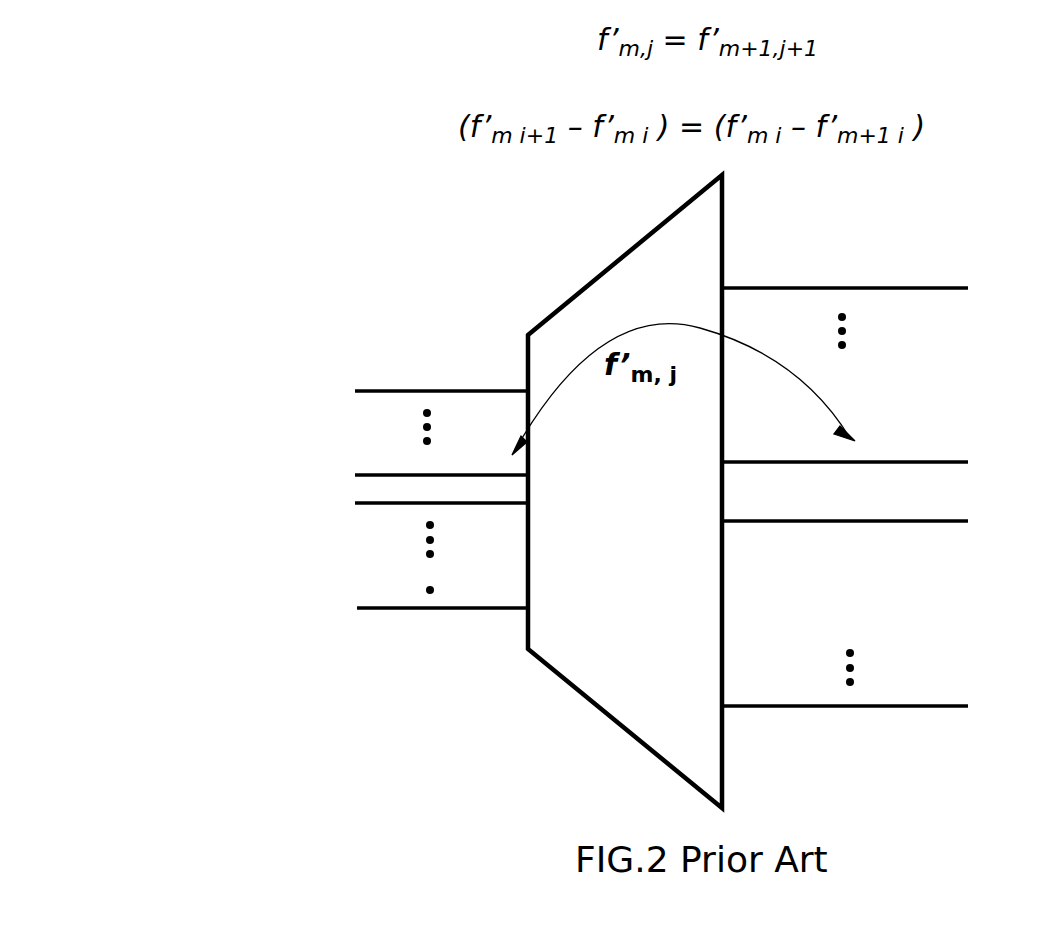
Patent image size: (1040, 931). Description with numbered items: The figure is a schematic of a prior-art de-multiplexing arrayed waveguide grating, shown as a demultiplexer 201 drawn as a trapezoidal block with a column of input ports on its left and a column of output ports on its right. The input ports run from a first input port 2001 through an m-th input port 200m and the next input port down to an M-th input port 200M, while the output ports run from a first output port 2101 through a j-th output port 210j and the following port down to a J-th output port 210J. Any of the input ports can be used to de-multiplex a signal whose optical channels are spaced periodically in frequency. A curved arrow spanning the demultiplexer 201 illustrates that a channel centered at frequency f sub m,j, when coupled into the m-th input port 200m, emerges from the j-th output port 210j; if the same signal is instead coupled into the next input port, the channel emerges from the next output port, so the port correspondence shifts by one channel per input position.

The demultiplexer 201 is at (625, 491).
The first input port 2001 is at (441, 359).
The m-th input port 200m is at (408, 440).
The M-th input port 200M is at (442, 640).
The first output port 2101 is at (845, 260).
The j-th output port 210j is at (845, 428).
The J-th output port 210J is at (854, 680).